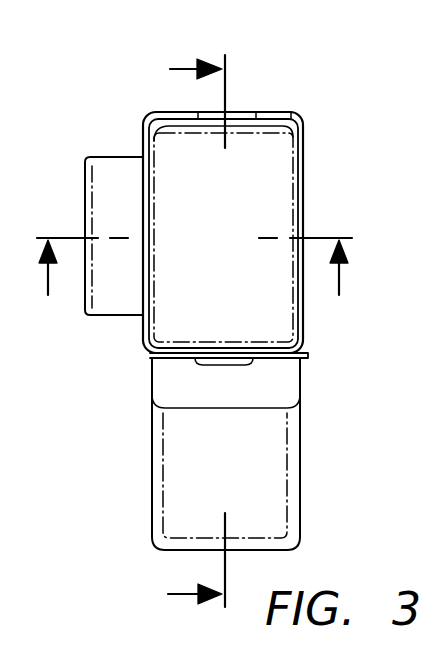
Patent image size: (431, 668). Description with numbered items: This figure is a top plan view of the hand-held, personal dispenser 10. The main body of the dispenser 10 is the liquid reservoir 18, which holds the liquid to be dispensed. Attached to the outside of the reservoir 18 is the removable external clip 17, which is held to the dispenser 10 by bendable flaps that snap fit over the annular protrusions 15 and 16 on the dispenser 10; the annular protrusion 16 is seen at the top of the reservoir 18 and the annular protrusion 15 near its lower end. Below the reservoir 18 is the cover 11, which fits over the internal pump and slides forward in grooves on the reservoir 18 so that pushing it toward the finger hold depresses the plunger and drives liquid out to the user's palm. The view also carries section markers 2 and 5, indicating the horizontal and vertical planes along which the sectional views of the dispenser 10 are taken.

The dispenser 10 is at (313, 168).
The cover 11 is at (152, 472).
The annular protrusion 15 is at (210, 372).
The annular protrusion 16 is at (238, 113).
The clip 17 is at (86, 182).
The liquid reservoir 18 is at (268, 200).
The section line 2- 2 is at (194, 286).
The section line 5- 5 is at (184, 332).